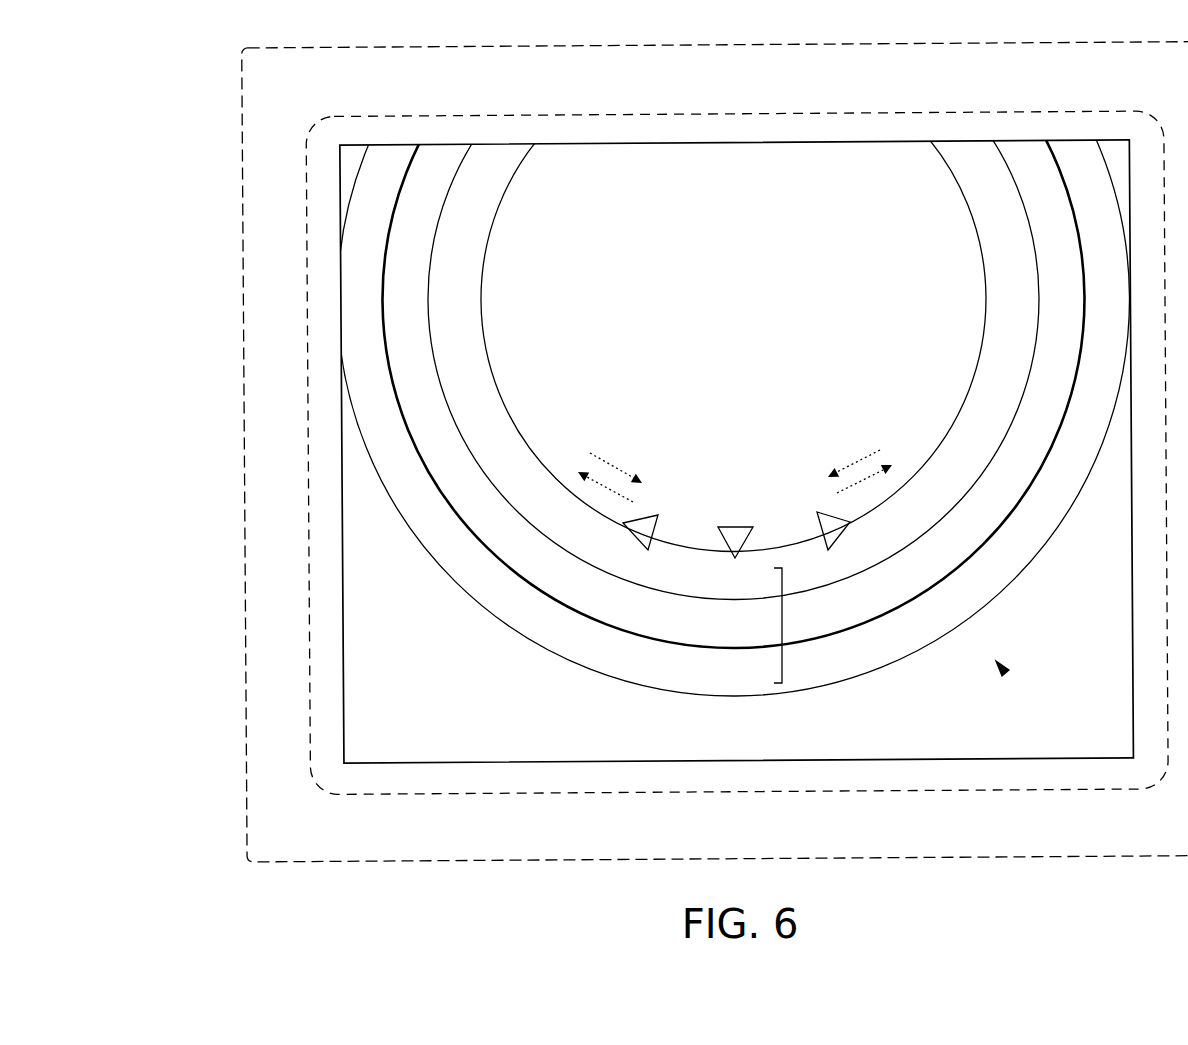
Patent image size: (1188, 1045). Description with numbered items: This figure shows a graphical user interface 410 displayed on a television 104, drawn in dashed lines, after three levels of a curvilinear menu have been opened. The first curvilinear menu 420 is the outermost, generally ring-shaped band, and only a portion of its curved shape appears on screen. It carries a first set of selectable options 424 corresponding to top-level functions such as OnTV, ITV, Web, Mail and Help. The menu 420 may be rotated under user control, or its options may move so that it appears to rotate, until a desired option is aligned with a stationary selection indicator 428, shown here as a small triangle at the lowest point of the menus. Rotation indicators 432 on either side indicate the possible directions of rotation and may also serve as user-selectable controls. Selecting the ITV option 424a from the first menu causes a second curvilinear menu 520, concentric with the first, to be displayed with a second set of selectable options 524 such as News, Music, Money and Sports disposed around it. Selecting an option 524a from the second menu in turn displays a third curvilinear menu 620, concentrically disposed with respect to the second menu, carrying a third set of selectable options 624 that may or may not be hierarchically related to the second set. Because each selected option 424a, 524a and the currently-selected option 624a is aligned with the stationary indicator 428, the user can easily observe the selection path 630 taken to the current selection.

The television 104 is at (242, 222).
The graphical user interface 410 is at (1002, 672).
The first curvilinear menu 420 is at (475, 600).
The first set of selectable options 424 is at (820, 520).
The ITV option 424a is at (763, 682).
The stationary selection indicator 428 is at (742, 526).
The rotation indicators 432 is at (645, 533).
The second curvilinear menu 520 is at (470, 535).
The second set of selectable options 524 is at (873, 436).
The selected option of second menu 524a is at (720, 643).
The third curvilinear menu 620 is at (480, 470).
The third set of selectable options 624 is at (598, 400).
The currently-selected option 624a is at (708, 575).
The selection path 630 is at (784, 622).